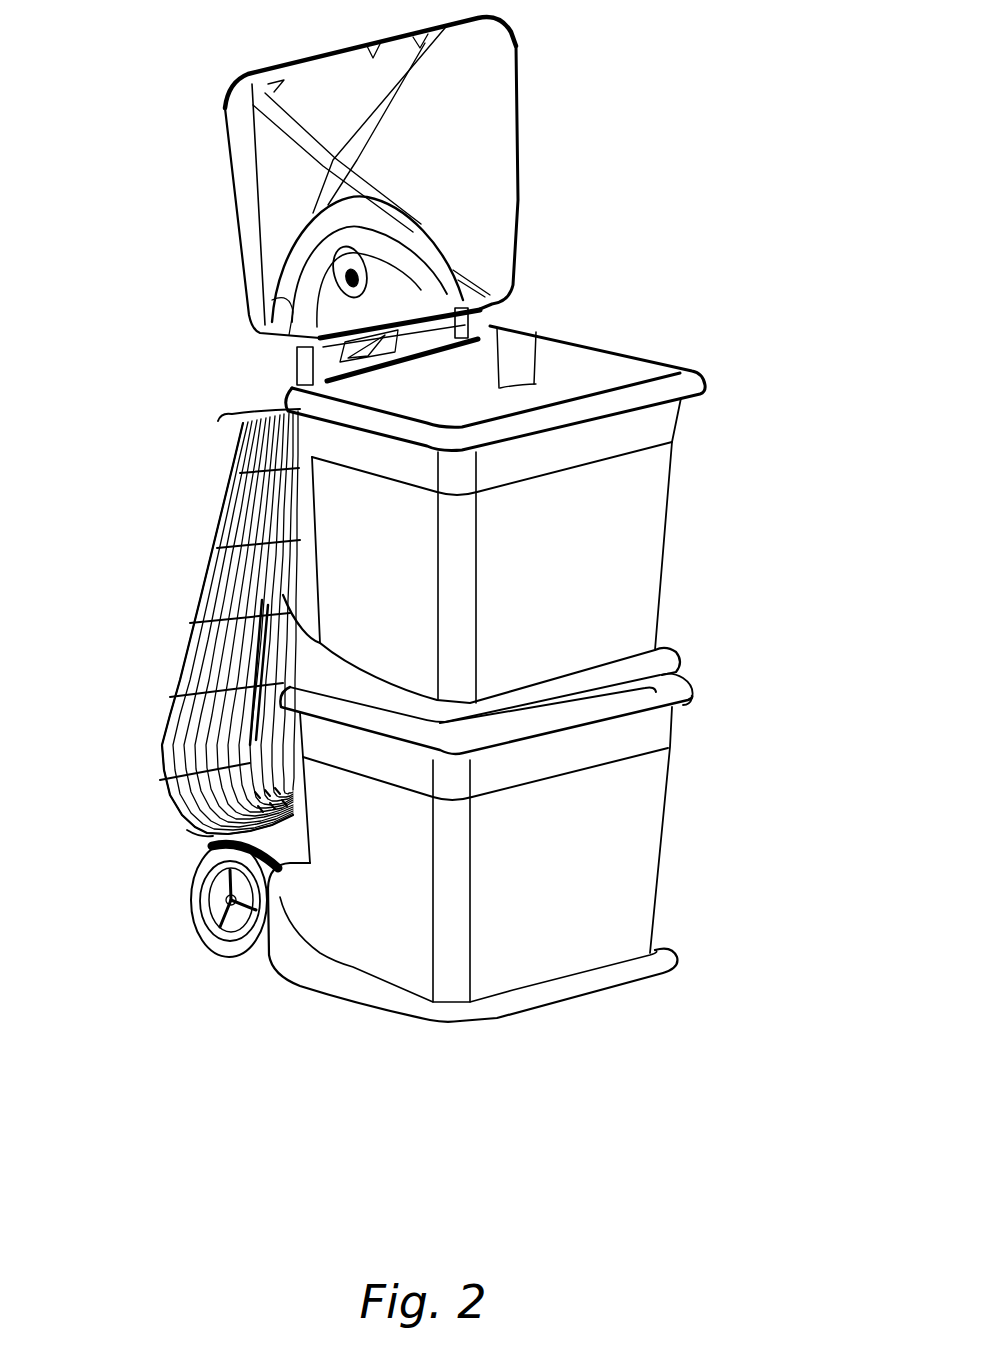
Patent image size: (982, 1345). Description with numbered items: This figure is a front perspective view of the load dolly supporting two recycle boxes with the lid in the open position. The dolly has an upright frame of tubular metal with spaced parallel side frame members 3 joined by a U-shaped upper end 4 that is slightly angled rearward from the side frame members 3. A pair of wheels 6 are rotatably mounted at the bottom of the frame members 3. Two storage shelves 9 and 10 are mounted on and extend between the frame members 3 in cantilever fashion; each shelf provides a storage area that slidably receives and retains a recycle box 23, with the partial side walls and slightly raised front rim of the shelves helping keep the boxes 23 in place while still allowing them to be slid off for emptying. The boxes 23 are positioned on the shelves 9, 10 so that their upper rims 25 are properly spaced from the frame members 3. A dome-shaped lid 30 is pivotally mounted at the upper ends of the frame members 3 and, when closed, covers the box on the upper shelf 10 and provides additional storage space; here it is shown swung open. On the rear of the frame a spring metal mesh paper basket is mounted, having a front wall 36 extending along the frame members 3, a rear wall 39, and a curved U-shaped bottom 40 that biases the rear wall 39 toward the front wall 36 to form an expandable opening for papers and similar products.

The lid 30 is at (517, 93).
The U-shaped upper end 4 is at (425, 232).
The side frame members 3 is at (302, 360).
The upper rim 25 is at (705, 380).
The recycle box 23 is at (640, 530).
The upper storage shelf 10 is at (683, 648).
The lower storage shelf 9 is at (663, 978).
The wheels 6 is at (213, 940).
The front wall 36 is at (258, 549).
The rear wall 39 is at (180, 648).
The curved U-shaped bottom 40 is at (187, 830).